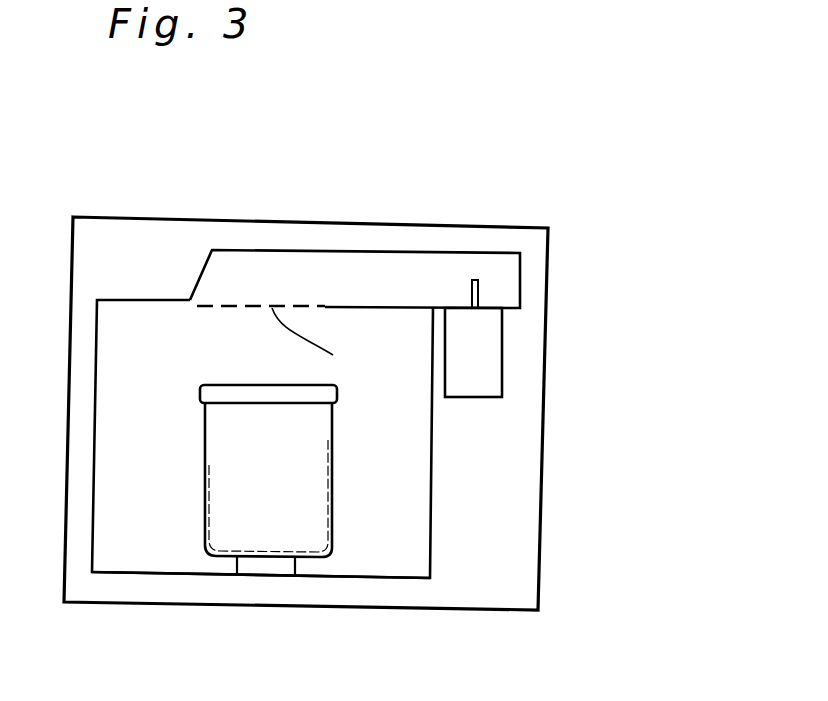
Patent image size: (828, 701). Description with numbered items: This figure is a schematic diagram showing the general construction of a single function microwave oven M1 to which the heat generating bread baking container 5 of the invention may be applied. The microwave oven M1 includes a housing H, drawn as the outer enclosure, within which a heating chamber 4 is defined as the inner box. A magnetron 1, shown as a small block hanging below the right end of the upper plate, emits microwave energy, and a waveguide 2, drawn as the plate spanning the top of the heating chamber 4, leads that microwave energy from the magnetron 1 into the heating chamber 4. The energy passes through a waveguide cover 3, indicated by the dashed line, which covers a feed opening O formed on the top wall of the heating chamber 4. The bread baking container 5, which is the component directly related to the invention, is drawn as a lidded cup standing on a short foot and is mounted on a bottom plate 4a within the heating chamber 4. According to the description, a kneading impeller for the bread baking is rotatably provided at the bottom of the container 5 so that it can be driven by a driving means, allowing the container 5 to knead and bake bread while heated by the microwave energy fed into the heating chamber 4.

The magnetron 1 is at (490, 368).
The waveguide 2 is at (442, 253).
The waveguide cover 3 is at (290, 307).
The heating chamber 4 is at (138, 323).
The bottom plate 4a is at (193, 573).
The bread baking container 5 is at (305, 493).
The housing H is at (547, 262).
The microwave oven M1 is at (544, 200).
The feed opening O is at (314, 341).